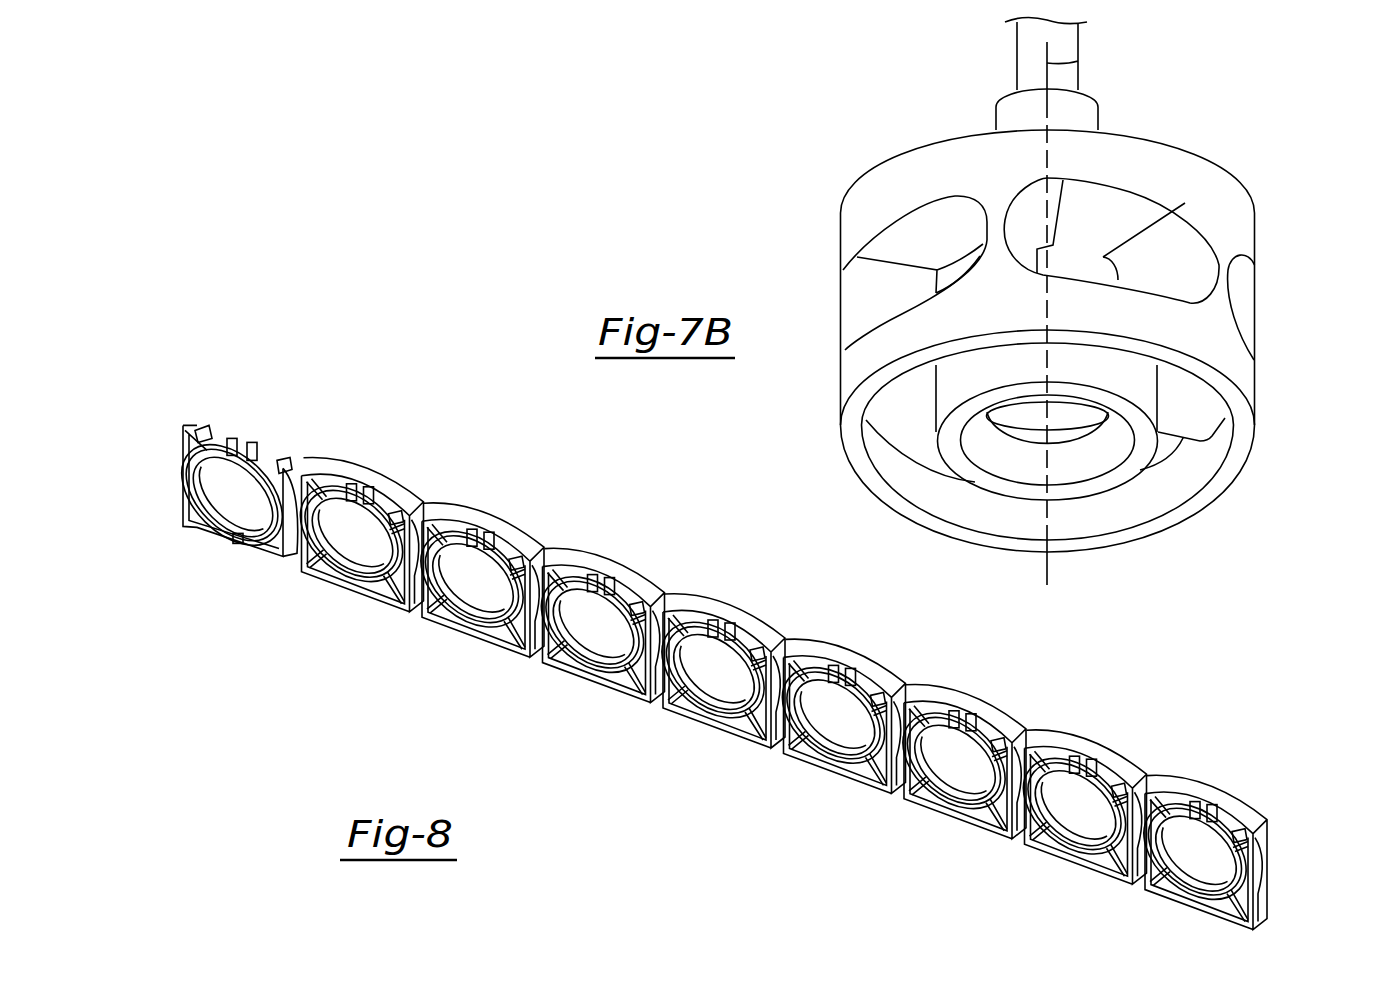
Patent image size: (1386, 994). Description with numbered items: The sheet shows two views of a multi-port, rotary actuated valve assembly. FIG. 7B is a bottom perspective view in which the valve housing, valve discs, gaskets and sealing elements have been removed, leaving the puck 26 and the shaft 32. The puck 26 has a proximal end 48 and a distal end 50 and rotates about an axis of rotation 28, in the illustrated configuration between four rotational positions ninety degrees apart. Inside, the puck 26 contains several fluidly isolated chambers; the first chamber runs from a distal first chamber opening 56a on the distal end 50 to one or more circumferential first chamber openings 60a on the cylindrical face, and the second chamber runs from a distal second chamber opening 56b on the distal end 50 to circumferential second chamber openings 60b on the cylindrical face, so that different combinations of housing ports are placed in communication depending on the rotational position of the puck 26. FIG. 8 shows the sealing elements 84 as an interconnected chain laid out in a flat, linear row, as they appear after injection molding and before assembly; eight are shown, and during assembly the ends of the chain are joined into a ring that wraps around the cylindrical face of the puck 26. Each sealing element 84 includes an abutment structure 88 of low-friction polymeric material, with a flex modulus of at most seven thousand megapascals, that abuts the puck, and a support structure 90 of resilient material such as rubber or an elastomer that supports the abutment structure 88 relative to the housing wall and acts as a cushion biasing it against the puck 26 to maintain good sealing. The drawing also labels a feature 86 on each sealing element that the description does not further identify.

In FIG. 7B, the puck 26 is at (1059, 325).
In FIG. 7B, the axis of rotation 28 is at (1087, 59).
In FIG. 7B, the shaft 32 is at (1017, 47).
In FIG. 7B, the proximal end 48 is at (948, 139).
In FIG. 7B, the distal end 50 is at (1204, 521).
In FIG. 7B, the distal first chamber opening 56a is at (1018, 458).
In FIG. 7B, the distal second chamber opening 56b is at (908, 433).
In FIG. 7B, the circumferential first chamber openings 60a is at (1173, 242).
In FIG. 7B, the circumferential second chamber openings 60b is at (885, 285).
In FIG. 8, the sealing elements 84 is at (768, 677).
In FIG. 8, the lens 86 is at (482, 583).
In FIG. 8, the abutment structure 88 is at (188, 492).
In FIG. 8, the support structure 90 is at (572, 556).